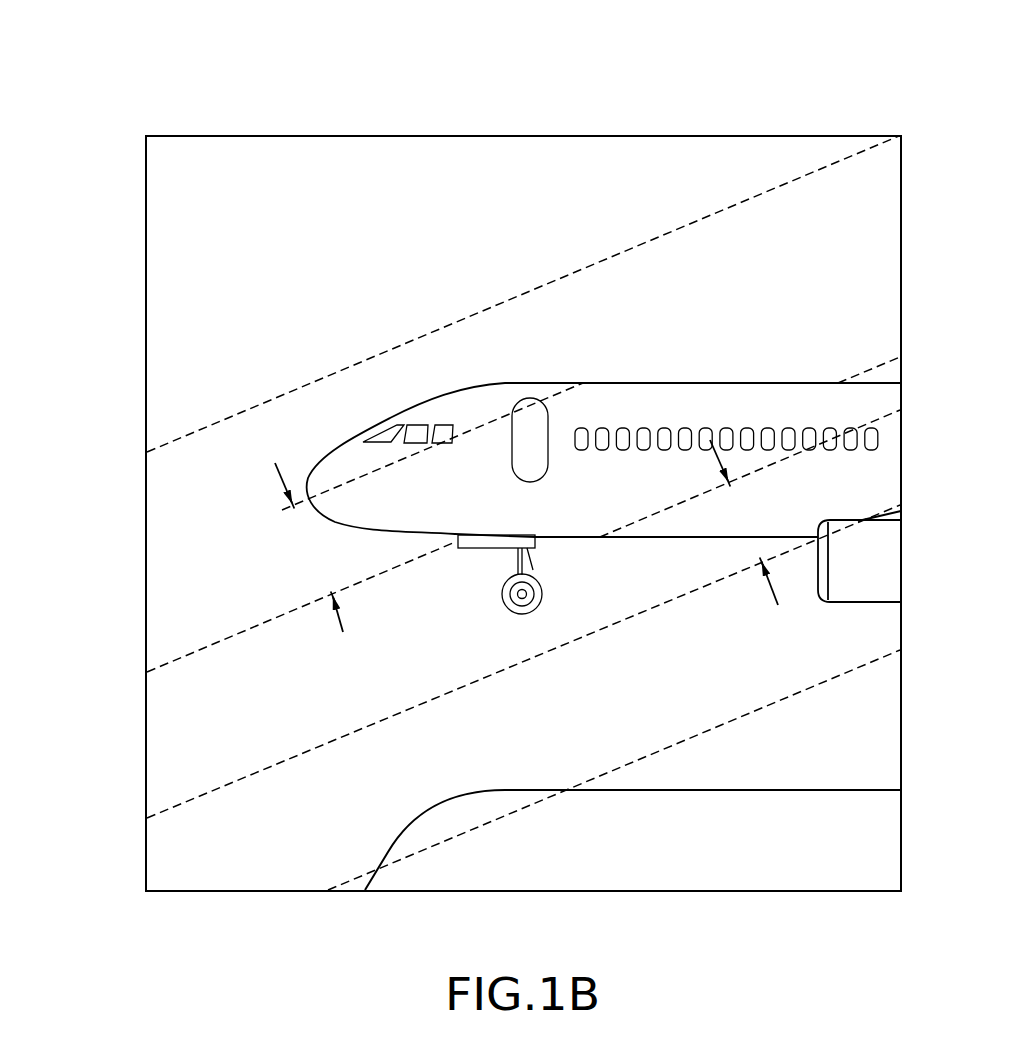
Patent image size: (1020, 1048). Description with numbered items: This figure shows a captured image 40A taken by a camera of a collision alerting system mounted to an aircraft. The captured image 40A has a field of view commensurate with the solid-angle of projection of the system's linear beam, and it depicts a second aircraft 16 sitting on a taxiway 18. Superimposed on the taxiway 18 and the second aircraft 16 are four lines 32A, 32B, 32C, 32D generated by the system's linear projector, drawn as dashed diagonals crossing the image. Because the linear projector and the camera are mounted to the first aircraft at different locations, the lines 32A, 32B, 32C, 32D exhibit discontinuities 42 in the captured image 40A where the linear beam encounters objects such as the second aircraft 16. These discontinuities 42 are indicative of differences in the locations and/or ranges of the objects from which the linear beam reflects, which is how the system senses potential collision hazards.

The captured image 40A is at (328, 93).
The second aircraft 16 is at (698, 407).
The taxiway 18 is at (295, 852).
The line 32A is at (743, 718).
The line 32B is at (146, 818).
The line 32C is at (146, 673).
The line 32D is at (146, 451).
The discontinuities 42 is at (338, 648).